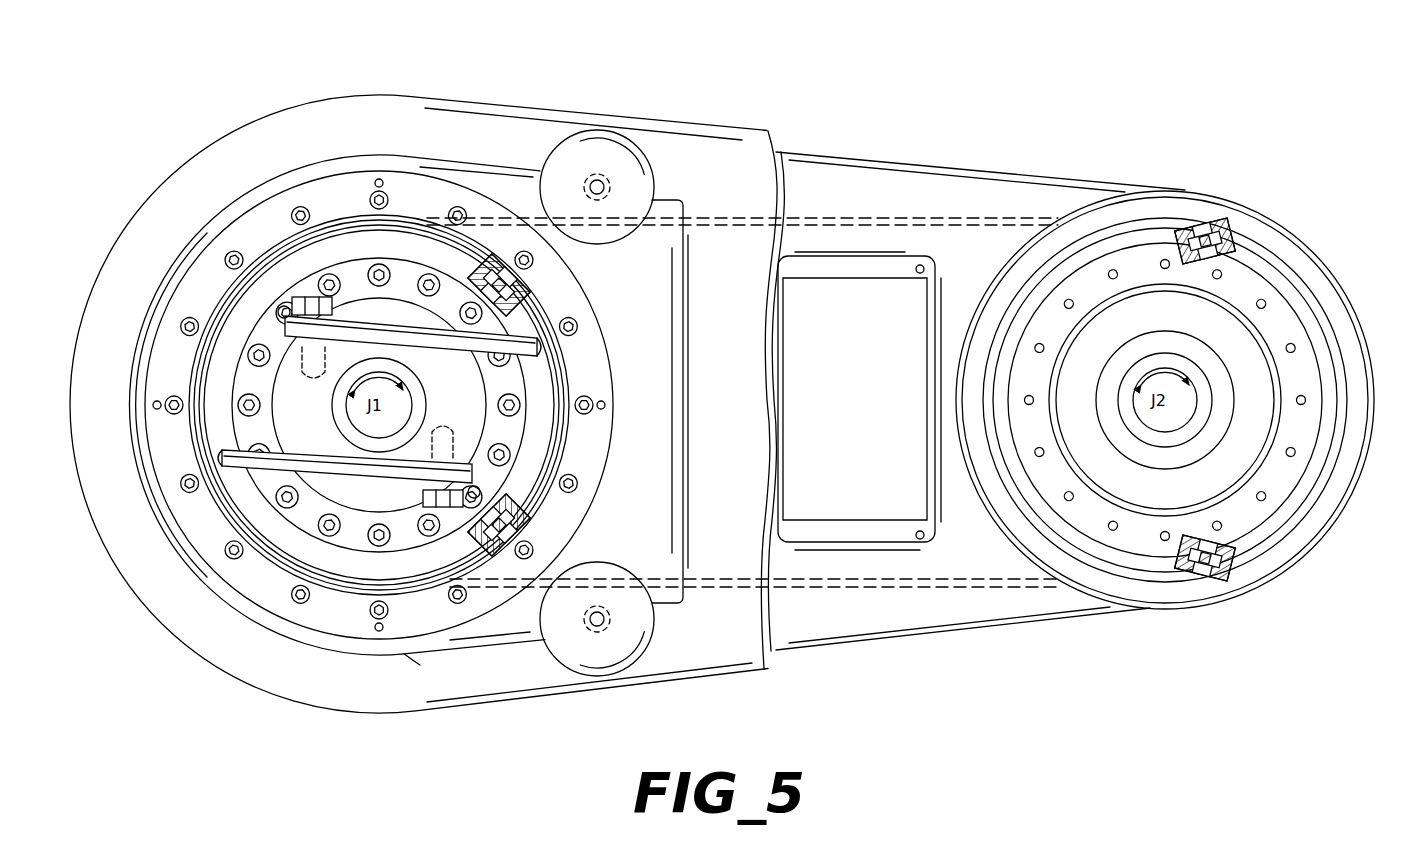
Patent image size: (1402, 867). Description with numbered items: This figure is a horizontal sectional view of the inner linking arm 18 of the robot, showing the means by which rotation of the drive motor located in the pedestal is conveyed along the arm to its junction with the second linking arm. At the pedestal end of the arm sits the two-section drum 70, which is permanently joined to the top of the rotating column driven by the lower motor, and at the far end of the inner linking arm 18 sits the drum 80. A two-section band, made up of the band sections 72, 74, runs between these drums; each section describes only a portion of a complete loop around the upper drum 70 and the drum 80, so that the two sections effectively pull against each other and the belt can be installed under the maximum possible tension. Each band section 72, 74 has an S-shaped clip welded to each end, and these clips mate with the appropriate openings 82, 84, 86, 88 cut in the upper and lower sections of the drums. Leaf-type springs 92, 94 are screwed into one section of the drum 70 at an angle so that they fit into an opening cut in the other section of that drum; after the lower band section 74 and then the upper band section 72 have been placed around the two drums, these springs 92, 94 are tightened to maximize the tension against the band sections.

The robot arm housing 18 is at (908, 688).
The two-section drum 70 is at (565, 367).
The band section 72 is at (412, 176).
The band section 74 is at (443, 587).
The drum 80 is at (1043, 262).
The opening 82 is at (501, 282).
The opening 84 is at (508, 540).
The opening 86 is at (1222, 560).
The clamp 88 is at (1214, 234).
The leaf-type spring 92 is at (340, 470).
The leaf-type spring 94 is at (385, 322).